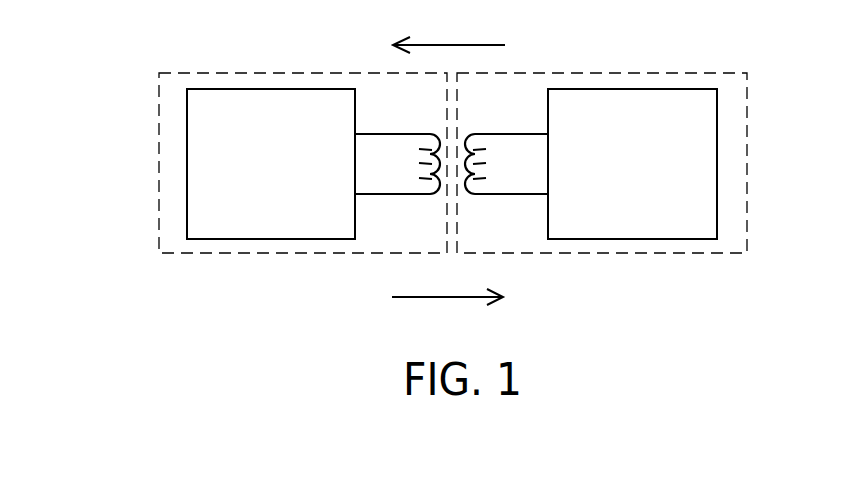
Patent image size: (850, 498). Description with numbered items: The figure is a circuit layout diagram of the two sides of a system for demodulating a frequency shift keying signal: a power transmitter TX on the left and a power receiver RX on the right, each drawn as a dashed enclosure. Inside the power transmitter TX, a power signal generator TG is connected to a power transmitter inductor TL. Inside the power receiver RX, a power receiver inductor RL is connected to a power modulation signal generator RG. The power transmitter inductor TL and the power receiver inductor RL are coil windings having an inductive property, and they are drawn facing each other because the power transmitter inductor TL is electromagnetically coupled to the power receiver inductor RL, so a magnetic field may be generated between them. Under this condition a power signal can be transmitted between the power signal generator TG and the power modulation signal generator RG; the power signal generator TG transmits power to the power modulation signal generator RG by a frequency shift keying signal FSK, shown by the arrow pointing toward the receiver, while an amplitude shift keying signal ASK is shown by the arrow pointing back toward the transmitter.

The power transmitter TX is at (159, 155).
The power receiver RX is at (747, 155).
The power signal generator TG is at (272, 89).
The power modulation signal generator RG is at (636, 89).
The power transmitter inductor TL is at (393, 132).
The power receiver inductor RL is at (507, 132).
The amplitude shift keying signal ASK is at (449, 32).
The frequency shift keying signal FSK is at (447, 286).